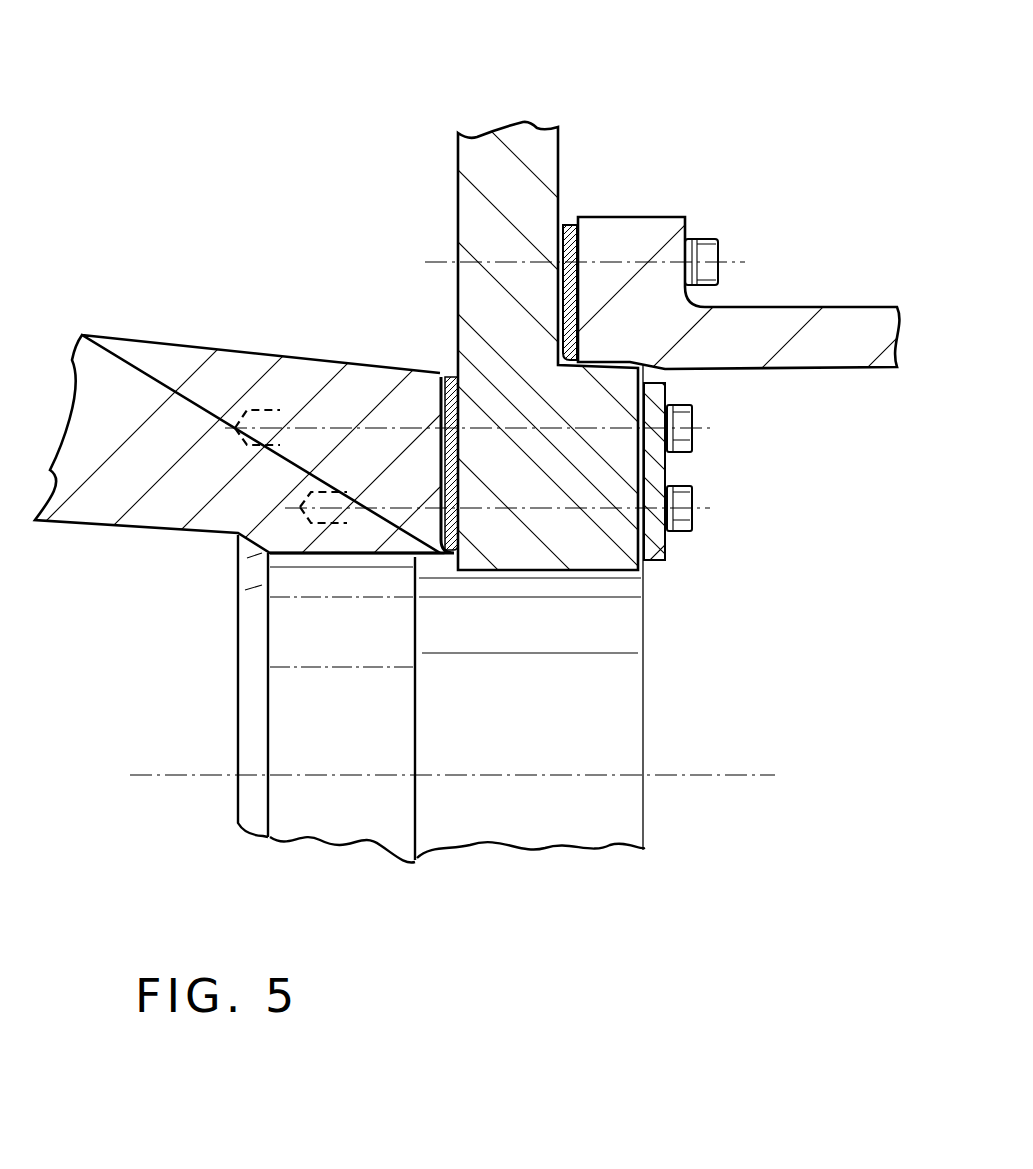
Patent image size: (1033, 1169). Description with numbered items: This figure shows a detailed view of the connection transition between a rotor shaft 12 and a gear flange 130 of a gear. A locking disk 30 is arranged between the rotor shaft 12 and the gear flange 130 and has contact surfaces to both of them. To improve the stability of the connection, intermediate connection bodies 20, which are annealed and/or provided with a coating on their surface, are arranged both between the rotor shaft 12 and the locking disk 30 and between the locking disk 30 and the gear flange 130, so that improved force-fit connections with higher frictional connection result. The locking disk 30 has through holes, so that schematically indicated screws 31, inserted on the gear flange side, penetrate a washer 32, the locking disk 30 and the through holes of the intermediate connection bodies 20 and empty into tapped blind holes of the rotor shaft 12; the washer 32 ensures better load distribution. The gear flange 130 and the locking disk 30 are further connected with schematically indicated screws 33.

The rotor shaft 12 is at (135, 383).
The intermediate connection bodies 20 is at (565, 225).
The locking disk 30 is at (497, 160).
The screws 31 is at (370, 430).
The washer 32 is at (668, 563).
The screws 33 is at (498, 258).
The gear flange 130 is at (640, 243).